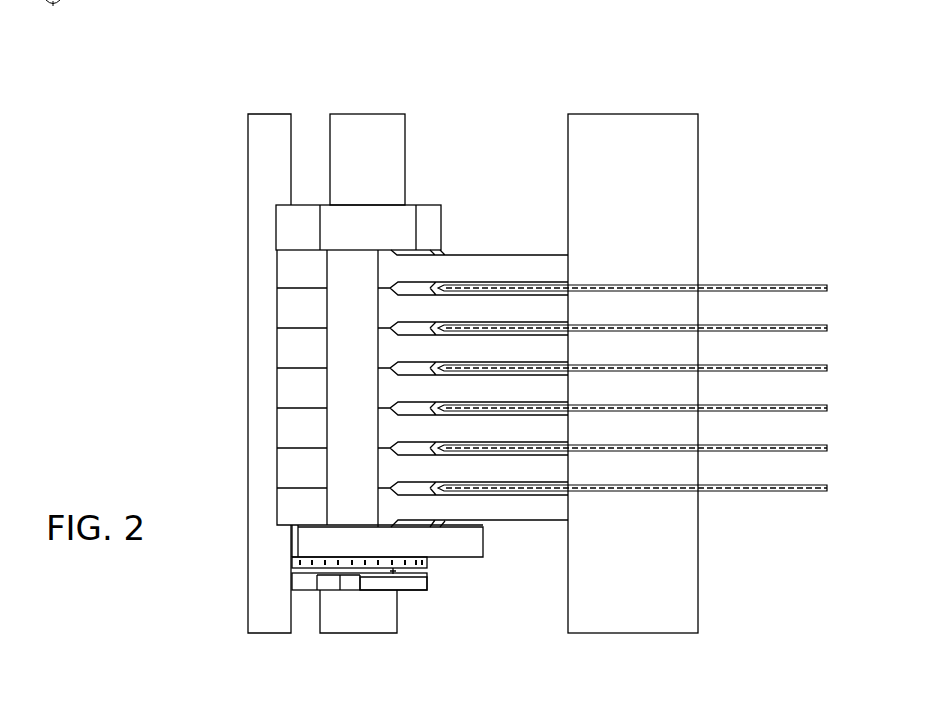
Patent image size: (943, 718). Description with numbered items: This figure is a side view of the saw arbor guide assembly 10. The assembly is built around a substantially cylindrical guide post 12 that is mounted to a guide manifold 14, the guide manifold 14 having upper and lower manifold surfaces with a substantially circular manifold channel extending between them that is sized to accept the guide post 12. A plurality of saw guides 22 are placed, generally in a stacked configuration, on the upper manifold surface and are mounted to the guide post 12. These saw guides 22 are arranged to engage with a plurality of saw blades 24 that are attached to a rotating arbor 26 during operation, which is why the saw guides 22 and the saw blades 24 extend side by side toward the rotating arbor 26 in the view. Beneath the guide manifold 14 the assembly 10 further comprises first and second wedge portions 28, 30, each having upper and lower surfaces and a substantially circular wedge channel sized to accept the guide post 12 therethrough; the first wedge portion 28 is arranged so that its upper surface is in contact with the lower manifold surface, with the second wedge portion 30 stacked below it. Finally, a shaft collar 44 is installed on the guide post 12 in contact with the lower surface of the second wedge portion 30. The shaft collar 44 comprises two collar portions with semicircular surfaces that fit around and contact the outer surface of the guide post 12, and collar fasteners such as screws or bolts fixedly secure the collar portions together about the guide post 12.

The saw arbor guide assembly 10 is at (527, 60).
The guide post 12 is at (367, 133).
The guide manifold 14 is at (472, 536).
The saw guides 22 is at (502, 312).
The saw blades 24 is at (782, 327).
The rotating arbor 26 is at (675, 173).
The first wedge portion 28 is at (428, 561).
The second wedge portion 30 is at (428, 573).
The shaft collar 44 is at (418, 585).